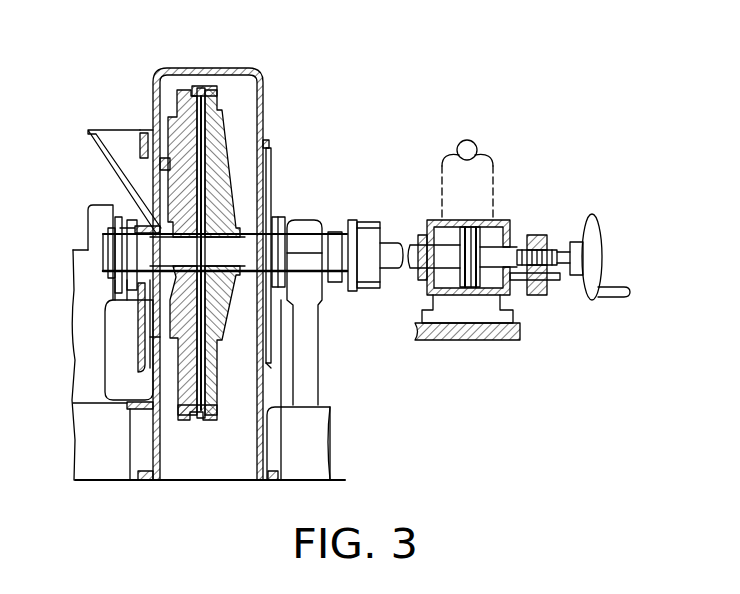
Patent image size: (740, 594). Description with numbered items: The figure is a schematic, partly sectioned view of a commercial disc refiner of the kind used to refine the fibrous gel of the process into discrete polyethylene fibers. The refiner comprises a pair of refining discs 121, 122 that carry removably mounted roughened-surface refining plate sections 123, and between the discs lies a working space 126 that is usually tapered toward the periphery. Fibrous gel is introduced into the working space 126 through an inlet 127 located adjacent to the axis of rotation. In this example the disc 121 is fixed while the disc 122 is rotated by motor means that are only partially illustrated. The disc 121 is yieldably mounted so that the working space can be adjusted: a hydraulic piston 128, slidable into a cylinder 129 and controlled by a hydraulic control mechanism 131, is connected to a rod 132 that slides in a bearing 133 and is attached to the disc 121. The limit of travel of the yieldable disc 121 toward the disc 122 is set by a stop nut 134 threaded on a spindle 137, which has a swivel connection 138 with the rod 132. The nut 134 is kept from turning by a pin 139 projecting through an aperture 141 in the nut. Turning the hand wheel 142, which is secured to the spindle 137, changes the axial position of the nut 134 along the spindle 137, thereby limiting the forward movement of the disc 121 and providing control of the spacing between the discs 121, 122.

The refining disc 121 is at (207, 92).
The refining disc 122 is at (178, 92).
The refining plate sections 123 is at (213, 95).
The working space 126 is at (215, 362).
The inlet 127 is at (158, 190).
The hydraulic piston 128 is at (458, 221).
The cylinder 129 is at (420, 288).
The hydraulic control mechanism 131 is at (478, 135).
The rod 132 is at (338, 232).
The bearing 133 is at (300, 221).
The stop nut 134 is at (540, 236).
The spindle 137 is at (550, 250).
The swivel connection 138 is at (372, 221).
The pin 139 is at (558, 290).
The aperture 141 is at (536, 300).
The hand wheel 142 is at (598, 243).